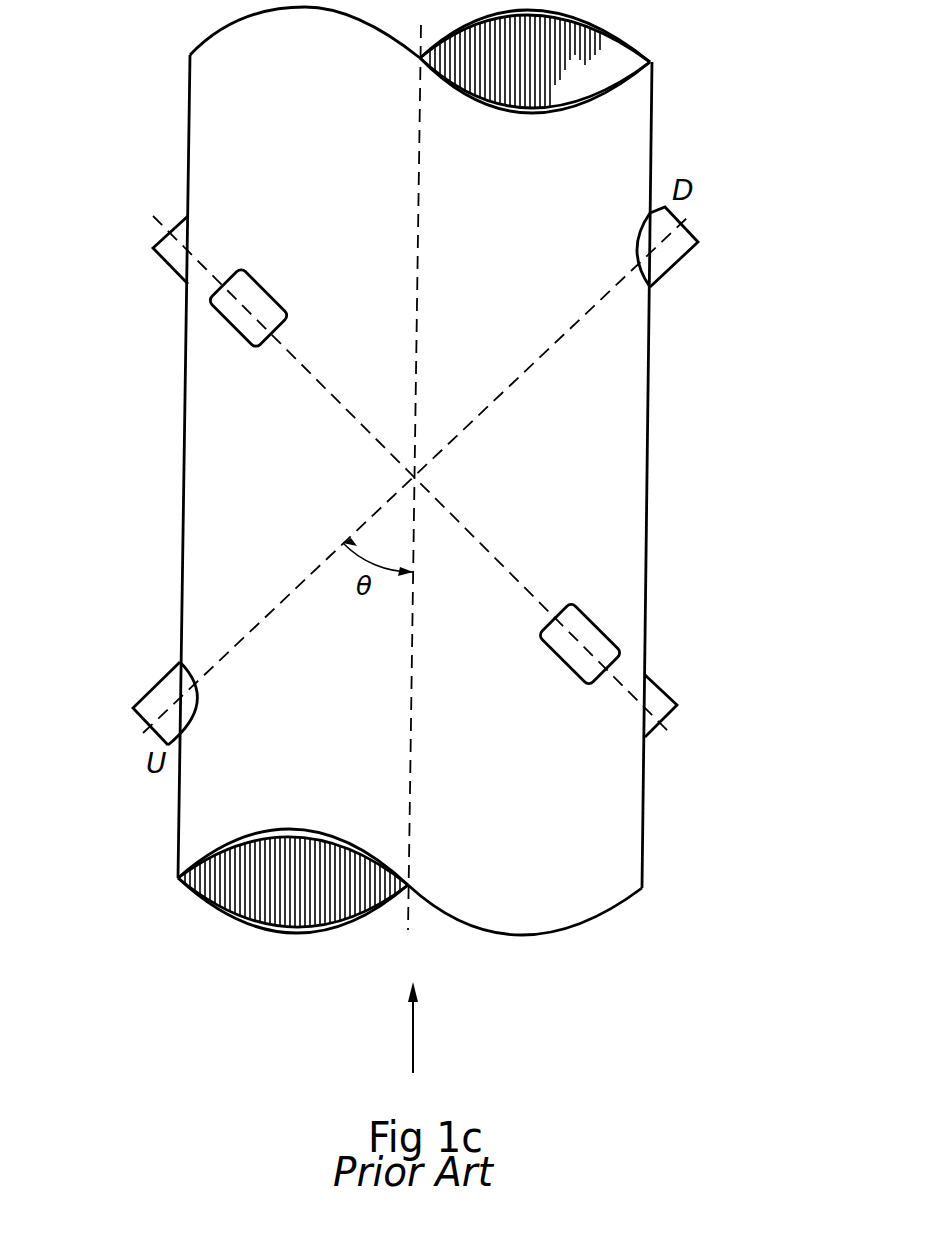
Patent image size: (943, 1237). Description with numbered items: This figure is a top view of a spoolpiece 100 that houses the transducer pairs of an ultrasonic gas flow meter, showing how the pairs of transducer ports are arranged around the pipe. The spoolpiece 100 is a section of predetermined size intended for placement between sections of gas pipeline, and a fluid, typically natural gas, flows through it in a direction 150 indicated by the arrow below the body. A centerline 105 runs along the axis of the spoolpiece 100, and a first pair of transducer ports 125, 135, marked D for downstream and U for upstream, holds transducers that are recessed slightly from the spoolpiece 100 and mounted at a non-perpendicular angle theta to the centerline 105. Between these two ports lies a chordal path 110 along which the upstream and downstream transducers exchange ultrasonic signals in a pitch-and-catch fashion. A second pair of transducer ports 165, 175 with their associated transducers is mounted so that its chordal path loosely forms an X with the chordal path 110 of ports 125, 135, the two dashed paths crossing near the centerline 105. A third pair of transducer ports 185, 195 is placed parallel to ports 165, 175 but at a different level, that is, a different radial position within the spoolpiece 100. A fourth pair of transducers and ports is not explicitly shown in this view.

The spoolpiece 100 is at (653, 120).
The centerline 105 is at (420, 183).
The path 110 is at (530, 368).
The transducer port 125 is at (682, 260).
The transducer port 135 is at (157, 690).
The flow direction 150 is at (415, 1040).
The transducer port 165 is at (163, 257).
The transducer port 175 is at (670, 688).
The transducer port 185 is at (260, 280).
The transducer port 195 is at (558, 657).